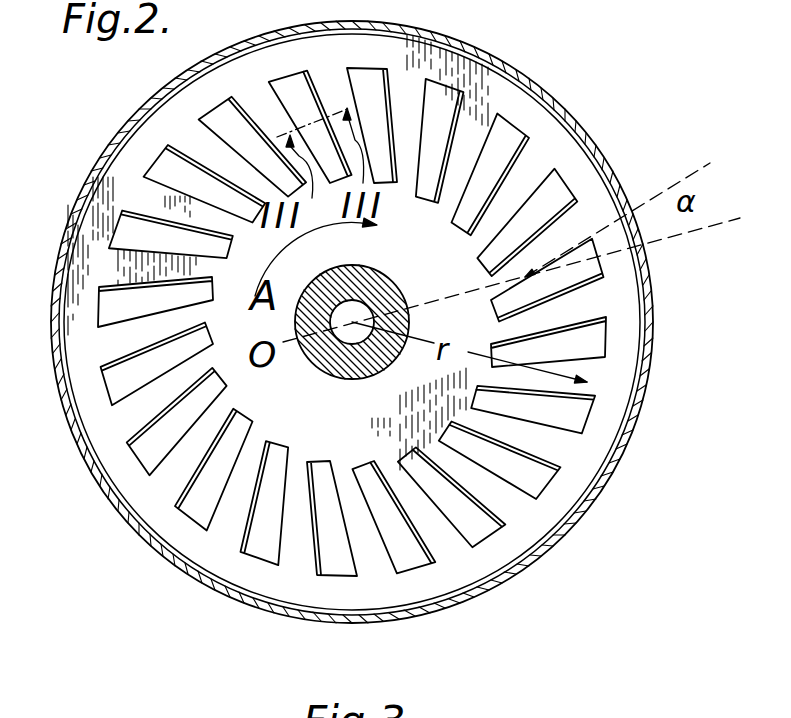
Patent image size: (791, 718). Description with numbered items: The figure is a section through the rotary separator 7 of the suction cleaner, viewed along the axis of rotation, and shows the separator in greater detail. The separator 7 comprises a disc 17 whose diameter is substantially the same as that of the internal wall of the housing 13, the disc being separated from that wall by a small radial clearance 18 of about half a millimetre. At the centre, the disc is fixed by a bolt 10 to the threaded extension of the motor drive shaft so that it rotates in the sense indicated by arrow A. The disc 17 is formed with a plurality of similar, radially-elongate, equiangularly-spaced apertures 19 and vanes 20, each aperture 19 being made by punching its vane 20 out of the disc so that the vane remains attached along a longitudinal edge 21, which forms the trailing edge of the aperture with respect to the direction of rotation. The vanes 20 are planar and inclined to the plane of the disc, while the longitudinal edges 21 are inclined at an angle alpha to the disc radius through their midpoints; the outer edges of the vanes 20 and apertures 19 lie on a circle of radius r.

The rotary separator 7 is at (618, 347).
The bolt 10 is at (355, 307).
The housing 13 is at (100, 485).
The disc 17 is at (127, 168).
The radial clearance 18 is at (622, 458).
The apertures 19 is at (248, 522).
The vanes 20 is at (533, 472).
The longitudinal edge 21 is at (547, 180).